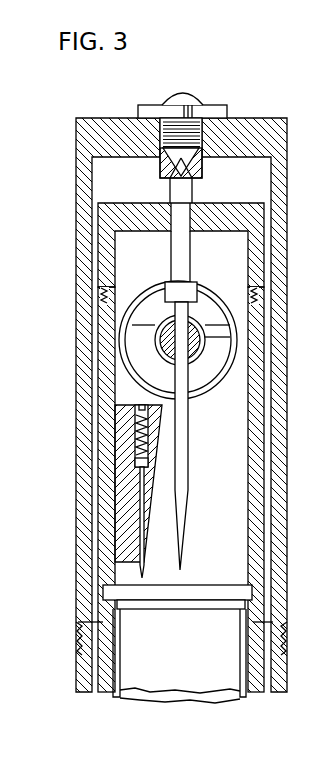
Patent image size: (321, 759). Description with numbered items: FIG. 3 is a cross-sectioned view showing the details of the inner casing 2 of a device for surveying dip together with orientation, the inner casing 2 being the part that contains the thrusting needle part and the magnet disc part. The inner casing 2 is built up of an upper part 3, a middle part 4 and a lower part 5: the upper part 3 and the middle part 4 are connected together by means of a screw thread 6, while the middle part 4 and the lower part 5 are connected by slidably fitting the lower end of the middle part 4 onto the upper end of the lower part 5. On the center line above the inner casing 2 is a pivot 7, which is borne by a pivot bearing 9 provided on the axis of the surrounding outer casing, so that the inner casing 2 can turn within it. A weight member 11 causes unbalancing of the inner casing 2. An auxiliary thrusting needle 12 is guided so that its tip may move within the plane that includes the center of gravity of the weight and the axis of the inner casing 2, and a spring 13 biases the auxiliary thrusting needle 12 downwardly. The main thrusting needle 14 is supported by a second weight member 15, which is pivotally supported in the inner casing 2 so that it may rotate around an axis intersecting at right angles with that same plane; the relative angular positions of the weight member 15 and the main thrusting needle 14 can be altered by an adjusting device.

The inner casing 2 is at (118, 198).
The upper part 3 is at (103, 242).
The middle part 4 is at (107, 343).
The lower part 5 is at (108, 657).
The screw thread 6 is at (101, 298).
The pivot 7 is at (184, 158).
The pivot bearing 9 is at (161, 150).
The weight member 11 is at (123, 507).
The auxiliary thrusting needle 12 is at (135, 512).
The spring 13 is at (138, 452).
The main thrusting needle 14 is at (182, 509).
The weight member 15 is at (225, 351).